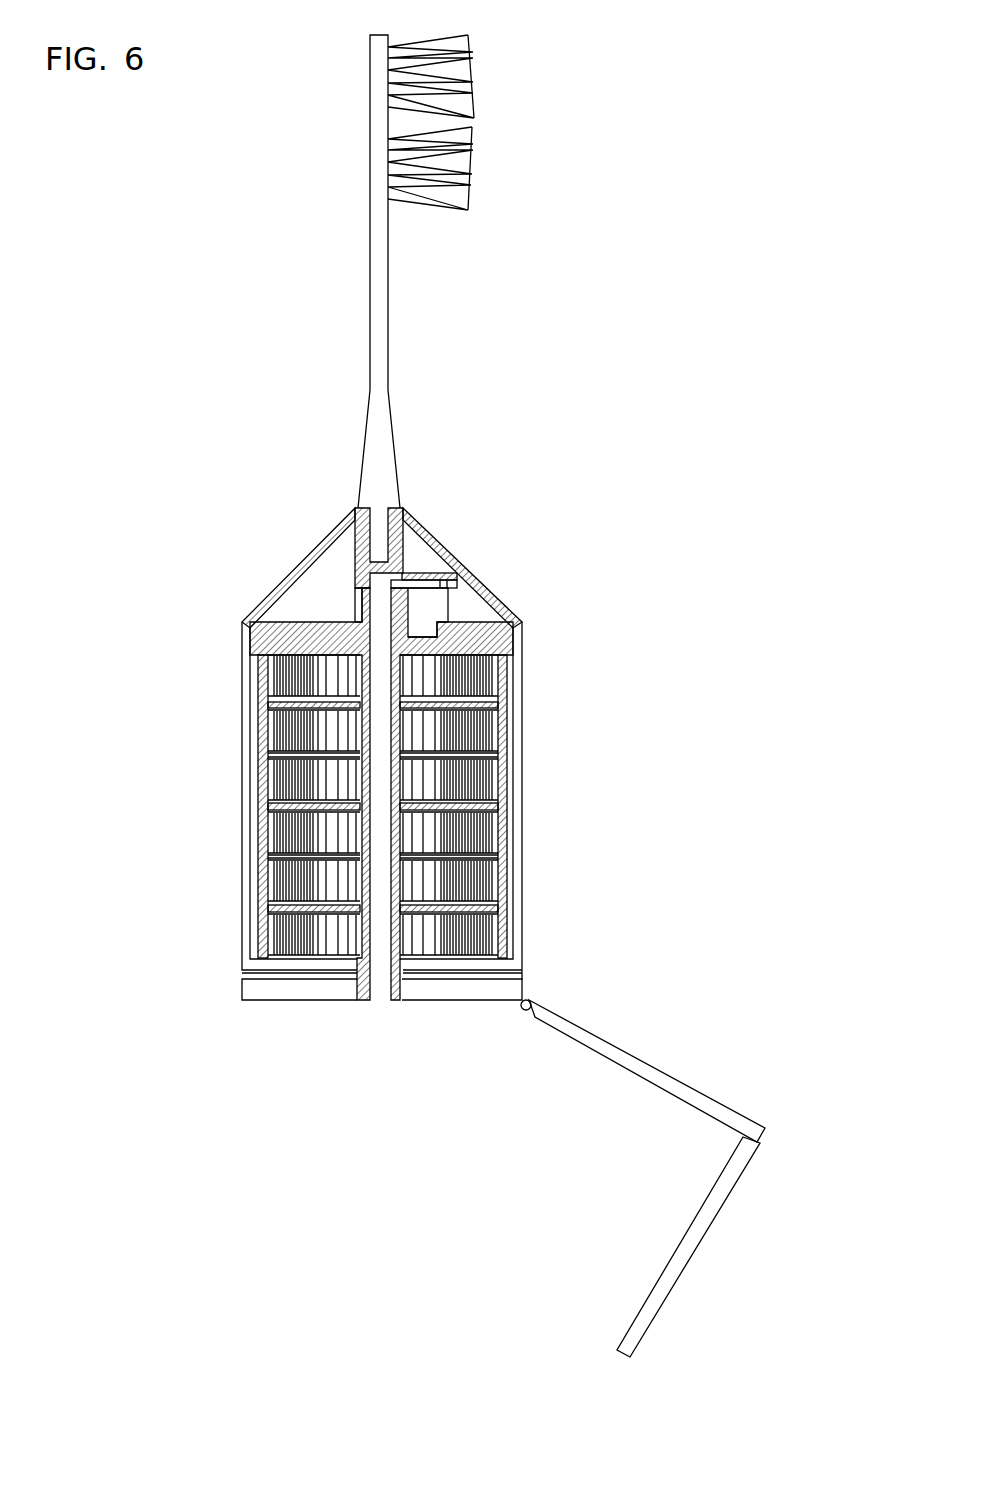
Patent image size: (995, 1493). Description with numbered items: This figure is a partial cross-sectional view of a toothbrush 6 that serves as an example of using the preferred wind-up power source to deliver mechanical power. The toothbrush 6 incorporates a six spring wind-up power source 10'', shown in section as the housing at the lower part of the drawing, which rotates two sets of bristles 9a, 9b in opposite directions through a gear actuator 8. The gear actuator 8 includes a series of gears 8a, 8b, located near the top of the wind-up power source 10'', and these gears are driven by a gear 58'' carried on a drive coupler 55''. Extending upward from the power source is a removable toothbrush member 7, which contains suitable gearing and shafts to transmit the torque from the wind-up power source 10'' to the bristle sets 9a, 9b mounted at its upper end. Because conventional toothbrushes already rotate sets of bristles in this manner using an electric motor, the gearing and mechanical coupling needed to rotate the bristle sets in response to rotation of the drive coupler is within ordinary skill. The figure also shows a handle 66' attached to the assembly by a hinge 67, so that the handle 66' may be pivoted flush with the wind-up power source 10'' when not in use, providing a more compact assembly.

The toothbrush 6 is at (428, 271).
The removable toothbrush member 7 is at (390, 393).
The bristle set 9a is at (472, 176).
The bristle set 9b is at (473, 94).
The gear actuator 8 is at (501, 550).
The gear 8a is at (435, 607).
The gear 8b is at (417, 572).
The gear 58'' is at (315, 553).
The drive coupler 55'' is at (281, 768).
The wind-up power source 10'' is at (429, 731).
The hinge 67 is at (528, 1000).
The handle 66' is at (651, 1178).